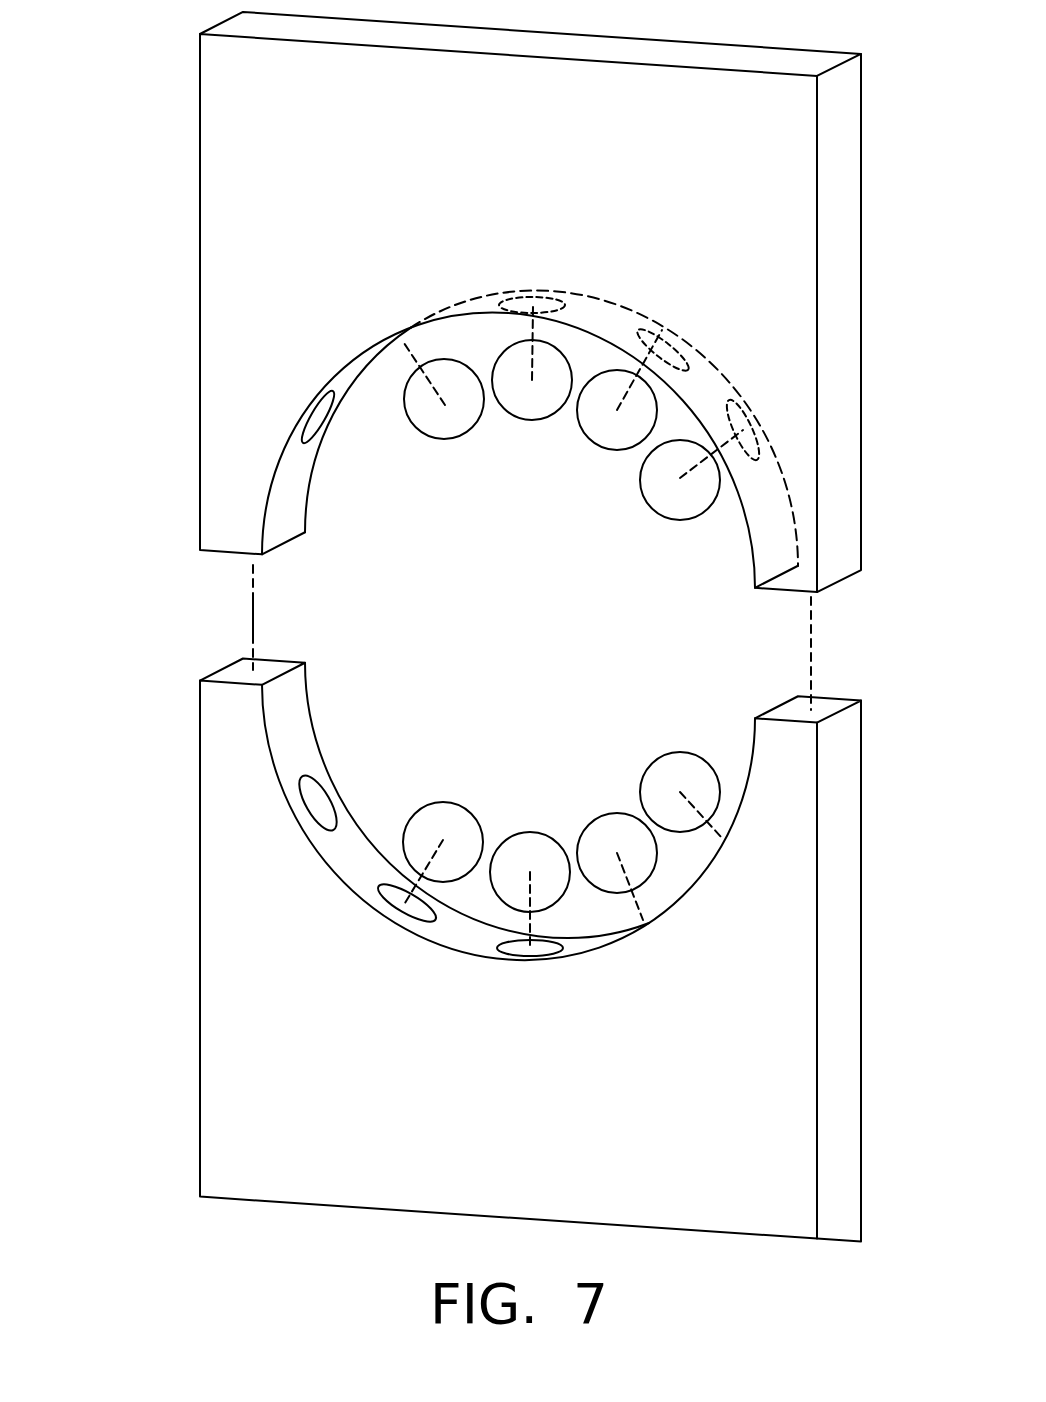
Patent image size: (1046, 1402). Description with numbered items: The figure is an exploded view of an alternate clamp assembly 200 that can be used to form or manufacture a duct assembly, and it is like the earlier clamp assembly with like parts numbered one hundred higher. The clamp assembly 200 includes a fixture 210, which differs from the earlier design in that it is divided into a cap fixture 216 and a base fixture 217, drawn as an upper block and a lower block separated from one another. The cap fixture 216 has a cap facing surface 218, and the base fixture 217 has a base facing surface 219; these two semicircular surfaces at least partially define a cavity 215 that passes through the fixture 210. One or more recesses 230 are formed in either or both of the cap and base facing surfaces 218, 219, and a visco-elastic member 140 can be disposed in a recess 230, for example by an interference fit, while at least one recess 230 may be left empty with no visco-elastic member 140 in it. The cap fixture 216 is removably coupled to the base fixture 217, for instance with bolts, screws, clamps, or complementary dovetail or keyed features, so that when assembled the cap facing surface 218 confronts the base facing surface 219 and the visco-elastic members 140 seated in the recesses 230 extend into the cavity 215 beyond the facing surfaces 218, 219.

The clamp assembly 200 is at (500, 646).
The fixture 210 is at (180, 614).
The cavity 215 is at (543, 651).
The cap fixture 216 is at (542, 302).
The base fixture 217 is at (530, 954).
The cap facing surface 218 is at (280, 515).
The base facing surface 219 is at (287, 692).
The visco-elastic member 140 is at (608, 463).
The recess 230 is at (668, 342).